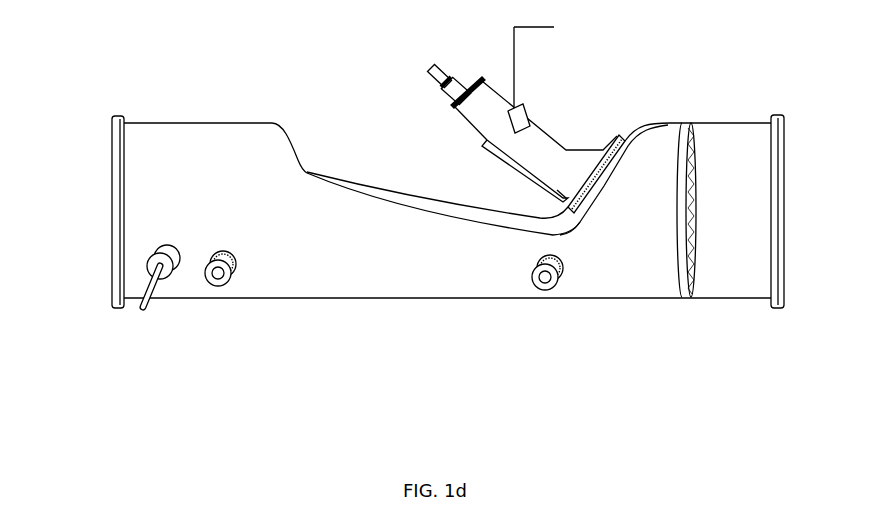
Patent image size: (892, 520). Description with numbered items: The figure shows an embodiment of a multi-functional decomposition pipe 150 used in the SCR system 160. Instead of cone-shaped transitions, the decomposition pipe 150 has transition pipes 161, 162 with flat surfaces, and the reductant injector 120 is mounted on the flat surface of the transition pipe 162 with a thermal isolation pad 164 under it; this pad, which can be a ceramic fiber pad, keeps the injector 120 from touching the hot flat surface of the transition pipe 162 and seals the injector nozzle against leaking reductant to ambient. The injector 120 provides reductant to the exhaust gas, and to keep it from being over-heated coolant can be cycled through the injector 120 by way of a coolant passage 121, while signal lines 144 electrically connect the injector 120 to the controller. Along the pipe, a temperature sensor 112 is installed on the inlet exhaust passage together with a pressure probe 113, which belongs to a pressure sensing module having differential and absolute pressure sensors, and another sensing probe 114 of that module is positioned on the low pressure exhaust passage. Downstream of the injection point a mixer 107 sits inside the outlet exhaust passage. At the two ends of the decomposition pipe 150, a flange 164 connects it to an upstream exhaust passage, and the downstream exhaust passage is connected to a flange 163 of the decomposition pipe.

The mixer 107 is at (697, 210).
The temperature sensor 112 is at (173, 288).
The pressure probe 113 is at (232, 288).
The sensing probe 114 is at (548, 289).
The reductant injector 120 is at (472, 78).
The coolant passage 121 is at (487, 146).
The signal lines 144 is at (515, 53).
The decomposition pipe 150 is at (349, 51).
The SCR system 160 is at (593, 298).
The transition pipe 161 is at (370, 198).
The transition pipe 162 is at (573, 223).
The flange 163 is at (784, 243).
The flange / thermal isolation pad 164 is at (111, 193).